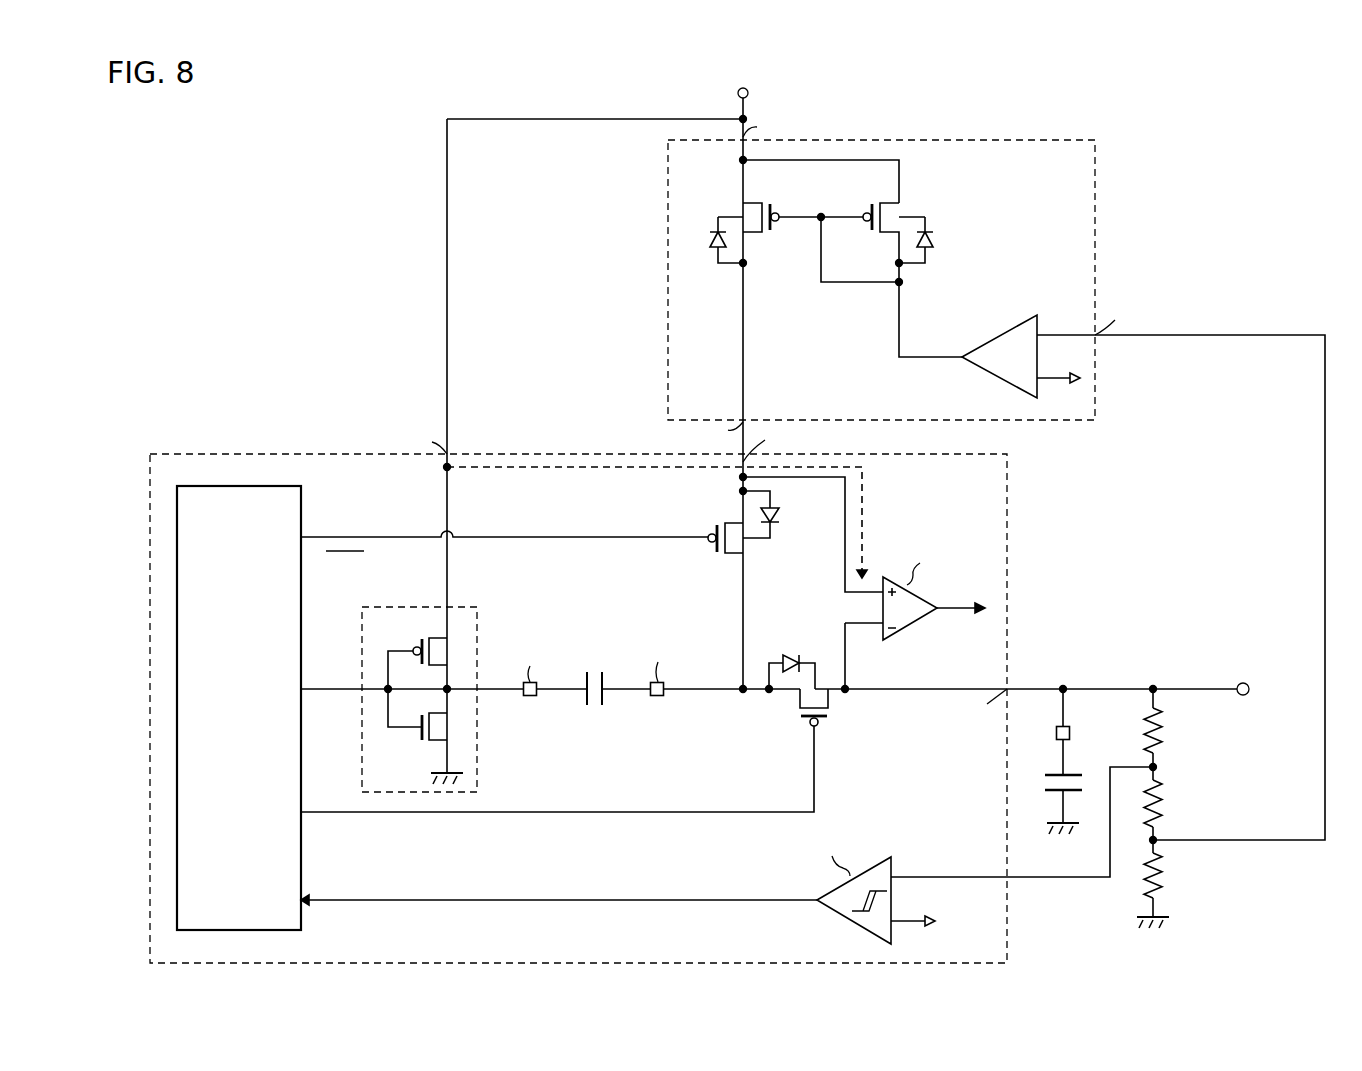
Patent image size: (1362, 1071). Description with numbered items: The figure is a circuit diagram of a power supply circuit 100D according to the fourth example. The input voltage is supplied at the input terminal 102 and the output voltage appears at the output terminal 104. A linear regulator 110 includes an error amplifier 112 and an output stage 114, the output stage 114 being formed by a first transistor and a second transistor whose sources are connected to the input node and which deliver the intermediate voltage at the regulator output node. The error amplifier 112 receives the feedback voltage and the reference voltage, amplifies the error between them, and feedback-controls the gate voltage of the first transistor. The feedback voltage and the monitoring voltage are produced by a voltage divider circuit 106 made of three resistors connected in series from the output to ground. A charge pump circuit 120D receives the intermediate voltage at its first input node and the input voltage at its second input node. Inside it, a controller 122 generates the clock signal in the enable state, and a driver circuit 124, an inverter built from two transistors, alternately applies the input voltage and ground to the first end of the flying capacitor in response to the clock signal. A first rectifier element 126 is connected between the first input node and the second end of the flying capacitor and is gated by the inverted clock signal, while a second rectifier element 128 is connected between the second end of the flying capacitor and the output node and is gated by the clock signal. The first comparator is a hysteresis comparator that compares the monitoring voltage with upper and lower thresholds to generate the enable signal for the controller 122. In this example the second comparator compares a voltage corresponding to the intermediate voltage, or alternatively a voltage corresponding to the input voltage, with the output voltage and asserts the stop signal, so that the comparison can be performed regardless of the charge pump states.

The power supply circuit 100D is at (1327, 100).
The input terminal (VCC) 102 is at (750, 93).
The output terminal (VOUT) 104 is at (1243, 683).
The voltage divider circuit 106 is at (1112, 928).
The linear regulator 110 is at (1095, 193).
The error amplifier 112 is at (993, 334).
The output stage 114 is at (703, 300).
The charge pump circuit 120D is at (1007, 505).
The controller 122 is at (301, 502).
The driver circuit 124 is at (465, 607).
The first rectifier element 126 is at (708, 553).
The second rectifier element 128 is at (797, 712).